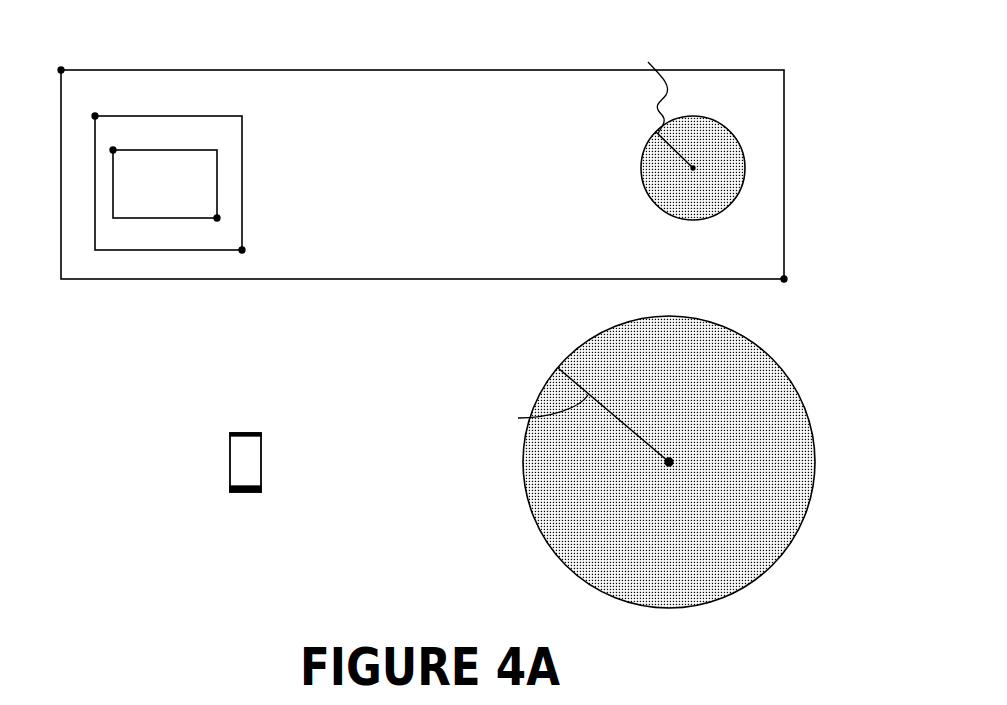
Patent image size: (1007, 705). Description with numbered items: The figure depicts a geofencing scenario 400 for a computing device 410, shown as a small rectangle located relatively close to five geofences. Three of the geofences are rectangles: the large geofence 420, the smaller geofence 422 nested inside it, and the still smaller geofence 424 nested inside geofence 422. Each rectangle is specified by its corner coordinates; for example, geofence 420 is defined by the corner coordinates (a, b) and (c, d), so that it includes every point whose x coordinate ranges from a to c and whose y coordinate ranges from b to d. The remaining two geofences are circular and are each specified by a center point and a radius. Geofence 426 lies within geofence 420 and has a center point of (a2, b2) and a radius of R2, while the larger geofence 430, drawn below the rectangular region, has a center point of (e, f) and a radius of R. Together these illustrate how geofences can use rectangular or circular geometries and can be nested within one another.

The geofencing scenario 400 is at (766, 53).
The computing device 410 is at (248, 432).
The geofence 420 is at (490, 186).
The geofence 422 is at (203, 116).
The geofence 424 is at (185, 202).
The geofence 426 is at (693, 220).
The geofence 430 is at (687, 388).